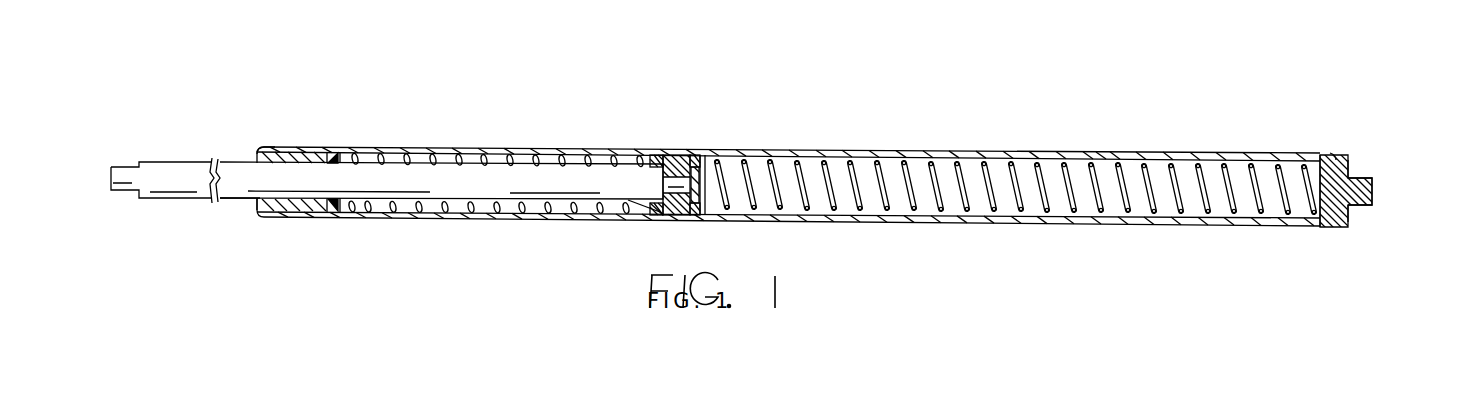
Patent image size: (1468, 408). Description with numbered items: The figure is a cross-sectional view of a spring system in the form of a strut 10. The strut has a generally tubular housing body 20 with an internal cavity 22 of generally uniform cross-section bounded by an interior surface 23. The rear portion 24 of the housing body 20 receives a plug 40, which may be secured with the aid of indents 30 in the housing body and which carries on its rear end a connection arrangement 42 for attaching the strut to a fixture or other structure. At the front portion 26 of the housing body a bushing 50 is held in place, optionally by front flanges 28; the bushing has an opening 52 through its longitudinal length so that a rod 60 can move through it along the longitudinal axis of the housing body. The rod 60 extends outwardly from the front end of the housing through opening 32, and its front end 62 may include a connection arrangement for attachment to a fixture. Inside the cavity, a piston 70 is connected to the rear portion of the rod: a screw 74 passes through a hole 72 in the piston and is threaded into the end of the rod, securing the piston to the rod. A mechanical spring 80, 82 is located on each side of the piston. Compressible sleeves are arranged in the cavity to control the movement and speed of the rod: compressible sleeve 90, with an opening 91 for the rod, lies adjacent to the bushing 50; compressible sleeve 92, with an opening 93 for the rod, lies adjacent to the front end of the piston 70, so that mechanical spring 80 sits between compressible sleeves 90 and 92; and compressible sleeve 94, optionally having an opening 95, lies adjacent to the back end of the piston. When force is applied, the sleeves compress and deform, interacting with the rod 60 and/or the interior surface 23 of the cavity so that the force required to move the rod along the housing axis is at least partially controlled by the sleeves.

The strut 10 is at (634, 112).
The housing body 20 is at (875, 155).
The internal cavity 22 is at (1000, 170).
The interior surface 23 is at (1109, 165).
The rear portion 24 is at (1312, 228).
The front portion 26 is at (303, 218).
The front flanges 28 is at (258, 204).
The indents 30 is at (1338, 161).
The opening 32 is at (255, 198).
The plug 40 is at (1352, 172).
The connection arrangement 42 is at (1373, 191).
The bushing 50 is at (295, 156).
The opening 52 is at (272, 160).
The rod 60 is at (455, 180).
The front end 62 is at (118, 165).
The piston 70 is at (673, 172).
The hole 72 is at (664, 158).
The screw 74 is at (702, 218).
The mechanical spring 80 is at (537, 163).
The mechanical spring 82 is at (800, 160).
The compressible sleeve 90 is at (335, 211).
The opening 91 is at (321, 214).
The compressible sleeve 92 is at (654, 222).
The opening 93 is at (640, 204).
The compressible sleeve 94 is at (697, 156).
The opening 95 is at (695, 213).